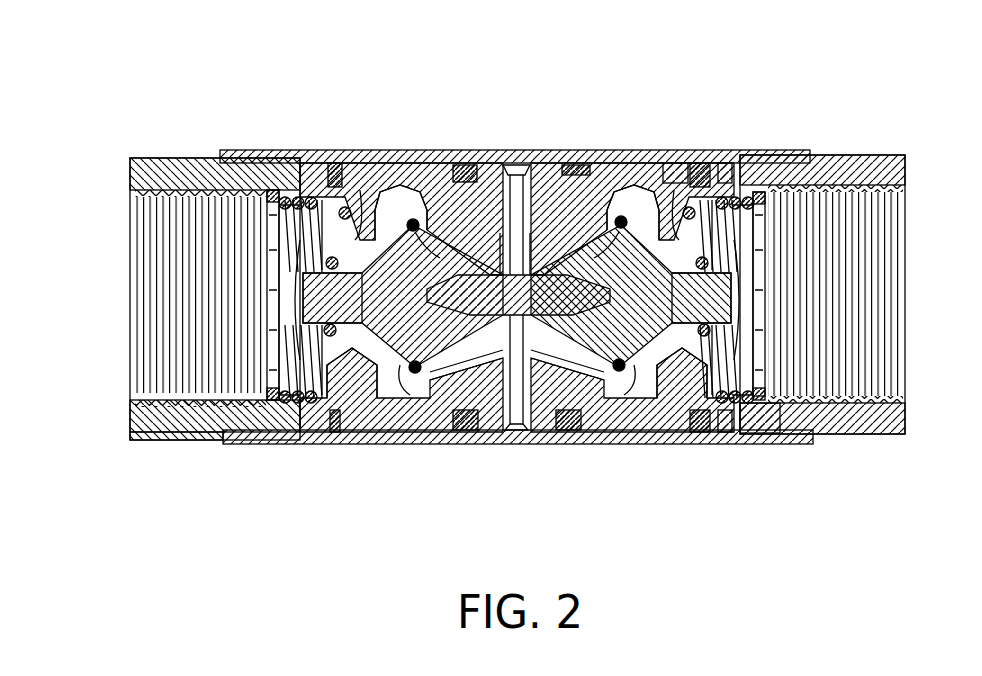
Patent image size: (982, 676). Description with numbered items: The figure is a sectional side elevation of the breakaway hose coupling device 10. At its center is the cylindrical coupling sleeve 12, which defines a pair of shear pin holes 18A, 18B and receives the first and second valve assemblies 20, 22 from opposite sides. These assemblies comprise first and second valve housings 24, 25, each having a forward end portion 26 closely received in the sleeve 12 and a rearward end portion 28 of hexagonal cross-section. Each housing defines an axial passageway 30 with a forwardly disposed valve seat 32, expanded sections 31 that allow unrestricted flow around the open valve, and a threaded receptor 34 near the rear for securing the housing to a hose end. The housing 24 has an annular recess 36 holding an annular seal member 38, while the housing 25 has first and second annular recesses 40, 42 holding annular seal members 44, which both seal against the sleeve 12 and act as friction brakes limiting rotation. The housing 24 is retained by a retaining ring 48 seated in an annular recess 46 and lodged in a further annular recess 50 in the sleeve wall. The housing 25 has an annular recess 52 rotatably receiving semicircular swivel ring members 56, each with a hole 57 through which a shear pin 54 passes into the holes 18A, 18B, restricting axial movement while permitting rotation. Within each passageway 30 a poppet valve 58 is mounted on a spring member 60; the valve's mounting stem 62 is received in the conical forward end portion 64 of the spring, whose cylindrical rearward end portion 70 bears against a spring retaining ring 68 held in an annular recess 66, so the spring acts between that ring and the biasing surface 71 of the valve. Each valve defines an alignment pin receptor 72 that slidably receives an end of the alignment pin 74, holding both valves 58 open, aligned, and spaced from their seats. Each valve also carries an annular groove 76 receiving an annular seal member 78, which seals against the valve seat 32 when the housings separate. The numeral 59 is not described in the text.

The breakaway hose coupling device 10 is at (724, 59).
The cylindrical coupling sleeve 12 is at (517, 163).
The shear pin hole 18A is at (706, 150).
The shear pin hole 18B is at (710, 444).
The first valve assembly 20 is at (208, 299).
The second valve assembly 22 is at (851, 290).
The first valve housing 24 is at (174, 144).
The second valve housing 25 is at (885, 142).
The forward end portion 26 is at (470, 430).
The rearward end portion 28 is at (132, 330).
The passageway 30 is at (338, 386).
The expanded section 31 is at (425, 370).
The valve seat 32 is at (483, 222).
The threaded receptor 34 is at (160, 400).
The annular recess 36 is at (395, 400).
The annular seal member 38 is at (465, 444).
The first annular recess 40 is at (565, 430).
The second annular recess 42 is at (655, 430).
The annular seal member 44 is at (590, 444).
The annular recess 46 is at (302, 163).
The retaining ring 48 is at (333, 163).
The further annular recess 50 is at (340, 163).
The annular recess 52 is at (750, 444).
The shear pin 54 is at (700, 163).
The semicircular swivel ring member 56 is at (718, 163).
The hole 57 is at (722, 163).
The poppet valve 58 is at (460, 165).
The spring seat 59 is at (297, 398).
The spring member 60 is at (322, 200).
The mounting stem 62 is at (305, 398).
The forward end portion 64 is at (335, 258).
The annular recess 66 is at (270, 200).
The spring retaining ring 68 is at (265, 190).
The rearward end portion 70 is at (279, 205).
The biasing surface 71 is at (365, 165).
The alignment pin receptor 72 is at (415, 220).
The alignment pin 74 is at (470, 275).
The annular groove 76 is at (634, 230).
The annular seal member 78 is at (600, 230).